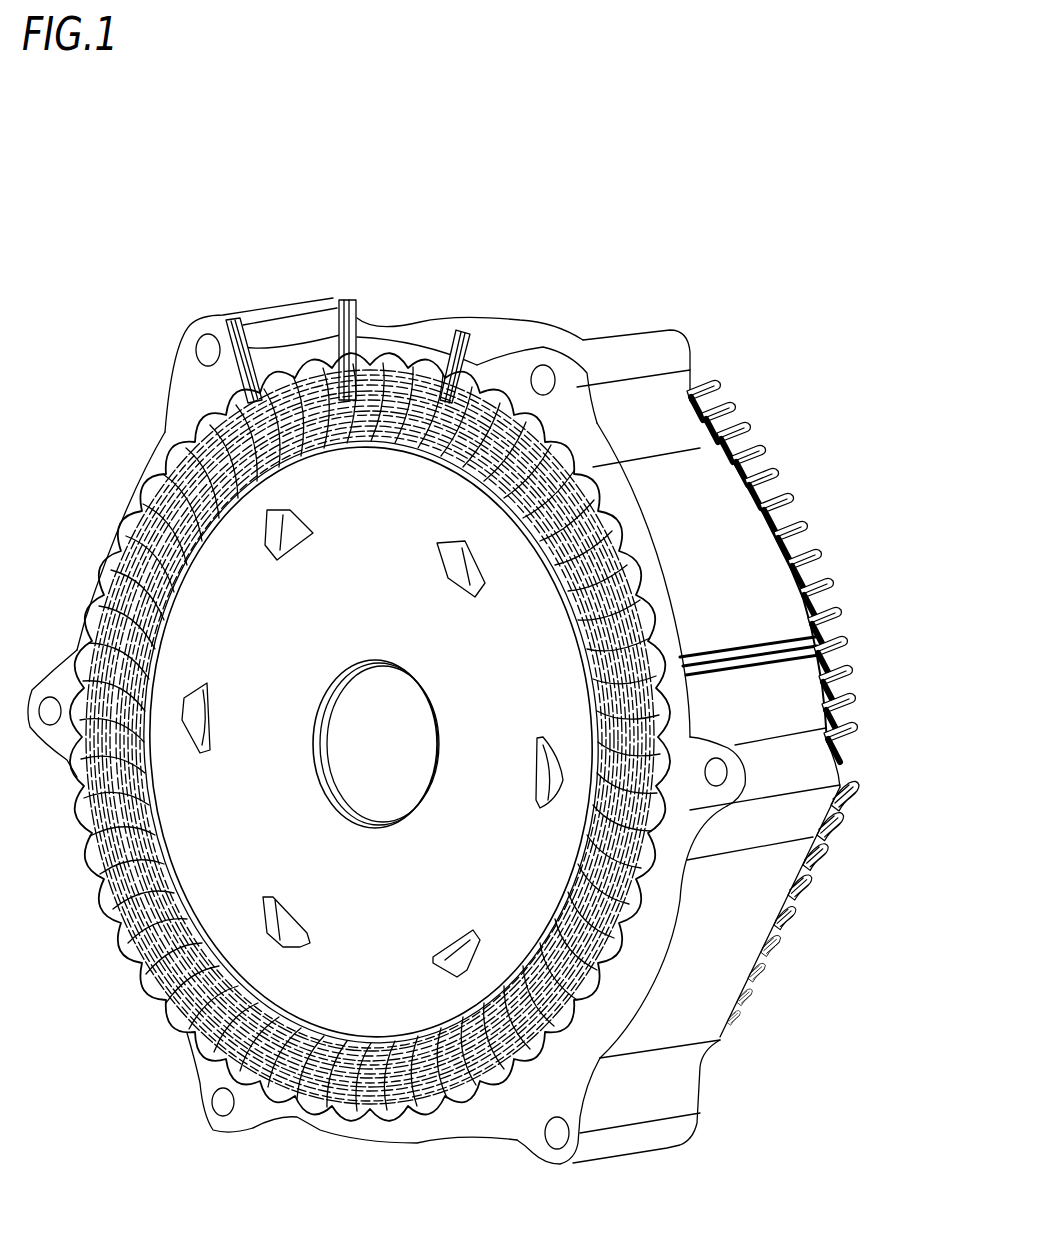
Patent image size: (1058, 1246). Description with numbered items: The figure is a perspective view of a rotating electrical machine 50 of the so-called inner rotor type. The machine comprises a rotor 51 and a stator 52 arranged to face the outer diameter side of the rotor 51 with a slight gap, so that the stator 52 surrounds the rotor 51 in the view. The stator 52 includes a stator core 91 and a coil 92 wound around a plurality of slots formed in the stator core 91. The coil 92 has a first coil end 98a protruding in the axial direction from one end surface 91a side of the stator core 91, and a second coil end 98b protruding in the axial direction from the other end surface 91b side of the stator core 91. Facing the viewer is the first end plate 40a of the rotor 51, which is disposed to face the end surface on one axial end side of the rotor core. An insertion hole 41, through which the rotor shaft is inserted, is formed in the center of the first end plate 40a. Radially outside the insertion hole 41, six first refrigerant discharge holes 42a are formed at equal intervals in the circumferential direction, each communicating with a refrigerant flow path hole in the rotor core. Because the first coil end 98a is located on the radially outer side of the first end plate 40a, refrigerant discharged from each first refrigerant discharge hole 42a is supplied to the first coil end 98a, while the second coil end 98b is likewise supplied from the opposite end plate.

The rotating electrical machine 50 is at (588, 148).
The stator 52 is at (549, 316).
The stator core 91 is at (713, 503).
The first coil end 98a is at (650, 595).
The second coil end 98b is at (818, 558).
The other end surface 91b is at (848, 766).
The one end surface 91a is at (683, 810).
The coil 92 is at (118, 500).
The rotor 51 is at (260, 885).
The first end plate 40a is at (415, 1005).
The insertion hole 41 is at (338, 682).
The first refrigerant discharge hole 42a is at (550, 767).